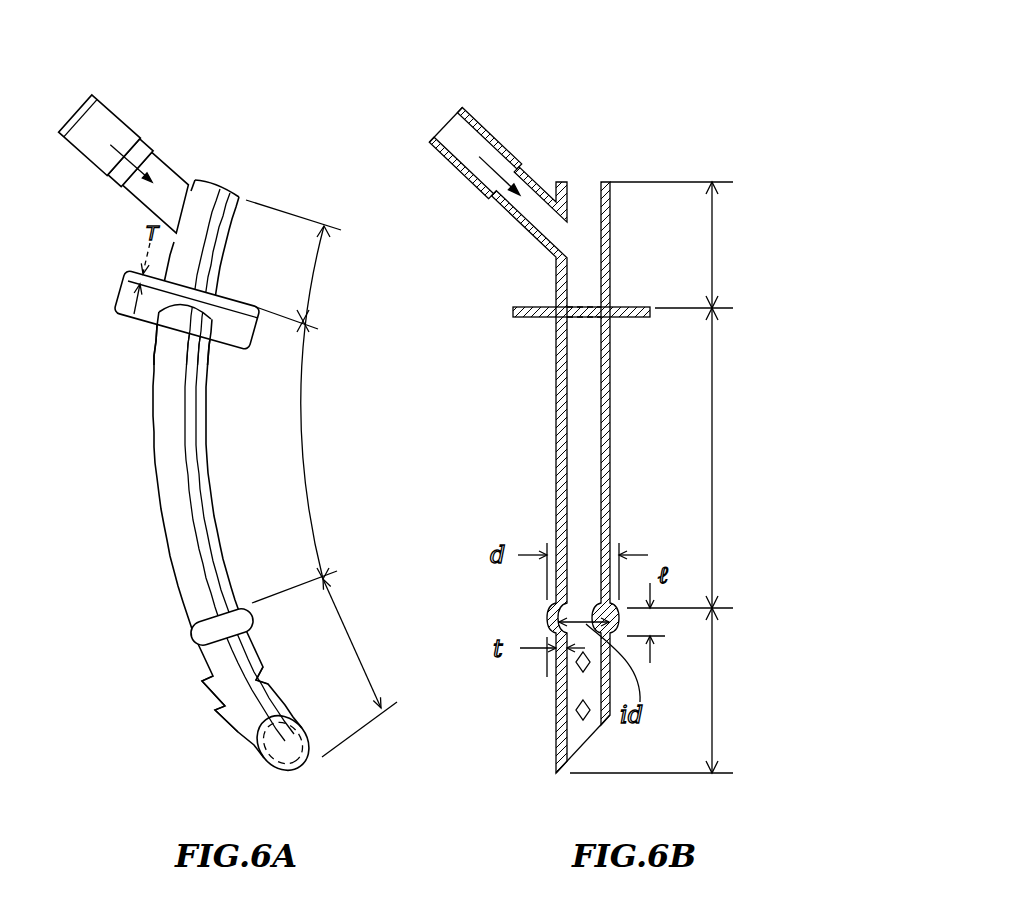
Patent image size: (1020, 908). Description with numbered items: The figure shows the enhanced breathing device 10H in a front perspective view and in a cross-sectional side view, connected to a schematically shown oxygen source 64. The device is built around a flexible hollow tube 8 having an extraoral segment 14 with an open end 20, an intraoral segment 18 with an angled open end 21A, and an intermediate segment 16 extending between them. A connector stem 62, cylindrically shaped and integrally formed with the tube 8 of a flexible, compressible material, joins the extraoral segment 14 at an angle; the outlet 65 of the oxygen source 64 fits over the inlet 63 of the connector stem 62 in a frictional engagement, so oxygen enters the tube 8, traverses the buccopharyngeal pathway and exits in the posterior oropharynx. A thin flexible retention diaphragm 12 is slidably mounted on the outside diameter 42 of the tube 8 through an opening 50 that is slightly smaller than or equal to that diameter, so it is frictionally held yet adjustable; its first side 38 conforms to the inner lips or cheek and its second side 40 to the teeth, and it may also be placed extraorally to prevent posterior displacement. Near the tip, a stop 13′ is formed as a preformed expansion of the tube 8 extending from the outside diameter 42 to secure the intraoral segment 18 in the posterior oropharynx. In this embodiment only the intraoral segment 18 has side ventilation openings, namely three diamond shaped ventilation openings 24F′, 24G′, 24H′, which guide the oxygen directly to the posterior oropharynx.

In FIG. 6A, the flexible hollow tube 8 is at (137, 430).
In FIG. 6B, the flexible hollow tube 8 is at (543, 456).
In FIG. 6A, the enhanced breathing device 10H is at (272, 86).
In FIG. 6B, the enhanced breathing device 10H is at (775, 172).
In FIG. 6A, the retention diaphragm 12 is at (124, 303).
In FIG. 6B, the retention diaphragm 12 is at (512, 312).
In FIG. 6A, the stop 13′ is at (196, 640).
In FIG. 6B, the stop 13′ is at (548, 616).
In FIG. 6A, the extraoral segment 14 is at (293, 389).
In FIG. 6B, the extraoral segment 14 is at (671, 245).
In FIG. 6A, the intermediate segment 16 is at (294, 520).
In FIG. 6B, the intermediate segment 16 is at (713, 458).
In FIG. 6A, the intraoral segment 18 is at (359, 668).
In FIG. 6B, the intraoral segment 18 is at (651, 690).
In FIG. 6A, the open end 20 is at (228, 184).
In FIG. 6B, the open end 20 is at (580, 182).
In FIG. 6A, the angled open end 21A is at (297, 770).
In FIG. 6B, the angled open end 21A is at (590, 752).
In FIG. 6A, the diamond shaped ventilation opening 24F′ is at (210, 682).
In FIG. 6B, the diamond shaped ventilation opening 24F′ is at (577, 668).
In FIG. 6A, the diamond shaped ventilation opening 24G′ is at (225, 712).
In FIG. 6B, the diamond shaped ventilation opening 24G′ is at (577, 716).
In FIG. 6A, the diamond shaped ventilation opening 24H′ is at (260, 680).
In FIG. 6B, the first side 38 is at (522, 306).
In FIG. 6B, the second side 40 is at (530, 318).
In FIG. 6A, the outside diameter 42 is at (161, 515).
In FIG. 6B, the outside diameter 42 is at (612, 228).
In FIG. 6B, the opening 50 is at (583, 318).
In FIG. 6A, the connector stem 62 is at (178, 178).
In FIG. 6B, the connector stem 62 is at (550, 196).
In FIG. 6A, the inlet 63 is at (108, 150).
In FIG. 6B, the inlet 63 is at (478, 162).
In FIG. 6A, the oxygen source 64 is at (118, 117).
In FIG. 6B, the oxygen source 64 is at (489, 126).
In FIG. 6A, the outlet 65 is at (162, 160).
In FIG. 6B, the outlet 65 is at (536, 163).